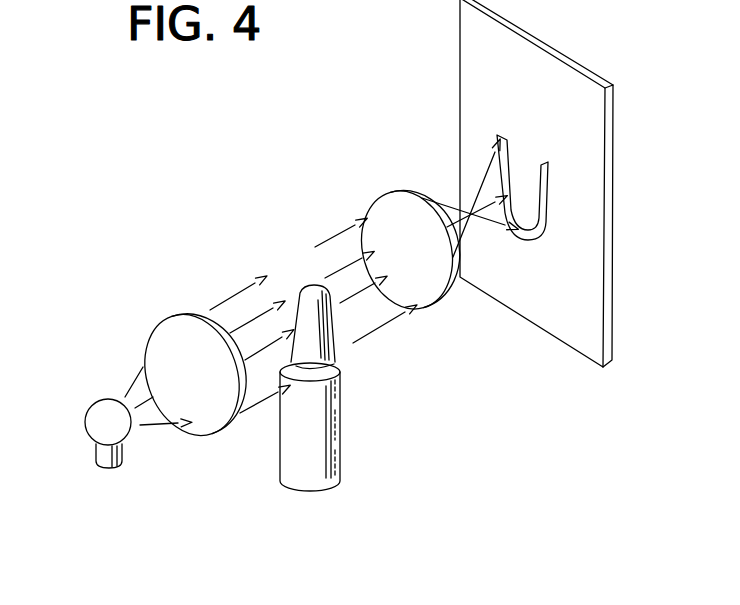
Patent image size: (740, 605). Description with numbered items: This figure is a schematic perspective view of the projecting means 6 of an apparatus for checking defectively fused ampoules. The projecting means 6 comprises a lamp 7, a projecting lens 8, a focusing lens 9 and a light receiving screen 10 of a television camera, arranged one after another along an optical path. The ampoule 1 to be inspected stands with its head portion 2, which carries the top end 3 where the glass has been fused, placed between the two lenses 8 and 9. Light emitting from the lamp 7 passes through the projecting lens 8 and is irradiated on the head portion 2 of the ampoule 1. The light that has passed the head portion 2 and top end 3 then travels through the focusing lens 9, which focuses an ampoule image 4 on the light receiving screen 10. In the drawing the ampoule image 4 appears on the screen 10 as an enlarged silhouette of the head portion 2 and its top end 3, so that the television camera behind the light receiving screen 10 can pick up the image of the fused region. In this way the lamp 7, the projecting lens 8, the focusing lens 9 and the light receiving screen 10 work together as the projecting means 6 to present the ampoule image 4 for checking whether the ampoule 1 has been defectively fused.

The ampoule 1 is at (345, 432).
The head portion 2 is at (320, 348).
The top end 3 is at (300, 297).
The ampoule image 4 is at (540, 220).
The projecting means 6 is at (215, 215).
The lamp 7 is at (92, 422).
The projecting lens 8 is at (170, 333).
The focusing lens 9 is at (390, 205).
The light receiving screen 10 is at (612, 225).